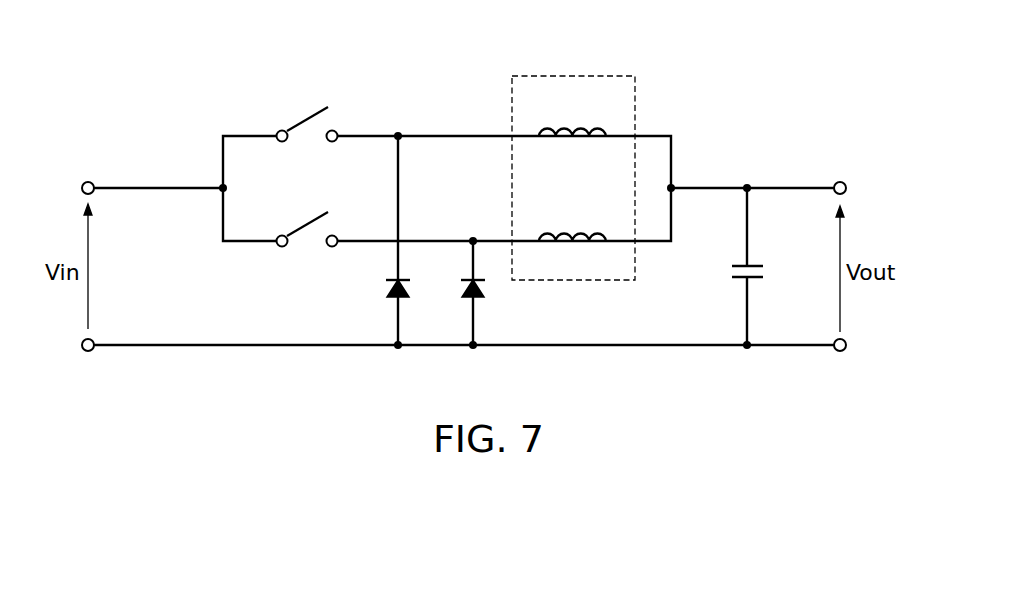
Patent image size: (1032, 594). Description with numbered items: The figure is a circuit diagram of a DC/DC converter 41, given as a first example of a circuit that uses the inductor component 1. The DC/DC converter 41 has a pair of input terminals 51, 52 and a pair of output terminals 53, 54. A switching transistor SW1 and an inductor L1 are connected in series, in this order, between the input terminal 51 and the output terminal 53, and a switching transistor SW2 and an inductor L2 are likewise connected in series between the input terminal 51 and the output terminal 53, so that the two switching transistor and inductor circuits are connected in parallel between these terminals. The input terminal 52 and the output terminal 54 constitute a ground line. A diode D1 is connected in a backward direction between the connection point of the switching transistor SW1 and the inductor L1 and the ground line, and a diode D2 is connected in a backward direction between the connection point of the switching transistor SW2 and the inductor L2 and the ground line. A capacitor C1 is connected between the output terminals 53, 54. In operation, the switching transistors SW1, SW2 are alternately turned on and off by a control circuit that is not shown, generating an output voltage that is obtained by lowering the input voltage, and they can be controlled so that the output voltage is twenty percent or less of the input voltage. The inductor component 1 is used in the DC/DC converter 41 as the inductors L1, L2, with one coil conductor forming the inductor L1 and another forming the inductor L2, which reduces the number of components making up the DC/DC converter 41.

The inductor component 1 is at (598, 75).
The DC/DC converter 41 is at (824, 40).
The input terminal 51 is at (81, 186).
The input terminal 52 is at (83, 349).
The output terminal 53 is at (847, 187).
The output terminal 54 is at (847, 344).
The switching transistor SW1 is at (305, 122).
The switching transistor SW2 is at (305, 227).
The diode D1 is at (388, 288).
The diode D2 is at (479, 288).
The inductor L1 is at (578, 122).
The inductor L2 is at (578, 226).
The capacitor C1 is at (757, 265).